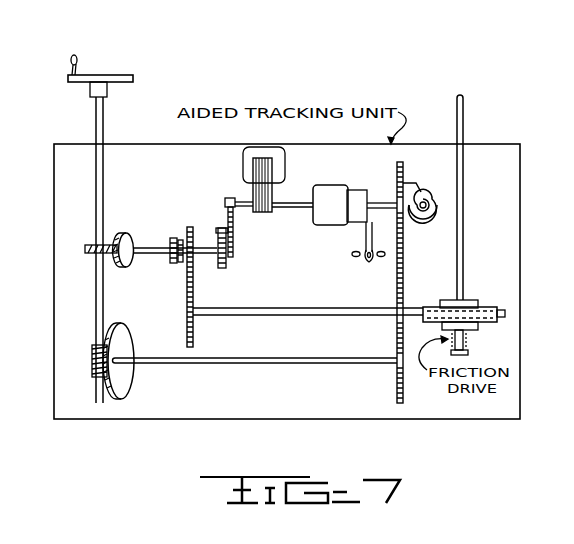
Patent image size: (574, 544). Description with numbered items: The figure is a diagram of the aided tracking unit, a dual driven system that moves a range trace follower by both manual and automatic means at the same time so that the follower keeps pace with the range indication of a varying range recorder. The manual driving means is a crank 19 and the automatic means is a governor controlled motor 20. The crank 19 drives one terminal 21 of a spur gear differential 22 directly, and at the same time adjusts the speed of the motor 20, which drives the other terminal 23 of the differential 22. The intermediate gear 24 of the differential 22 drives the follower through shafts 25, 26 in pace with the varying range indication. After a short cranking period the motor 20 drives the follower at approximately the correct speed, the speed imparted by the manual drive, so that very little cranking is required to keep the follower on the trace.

The crank 19 is at (70, 58).
The governor controlled motor 20 is at (249, 164).
The terminal 21 is at (176, 264).
The spur gear differential 22 is at (198, 220).
The terminal 23 is at (227, 264).
The intermediate gear 24 is at (194, 264).
The shaft 25 is at (325, 313).
The shaft 26 is at (464, 221).